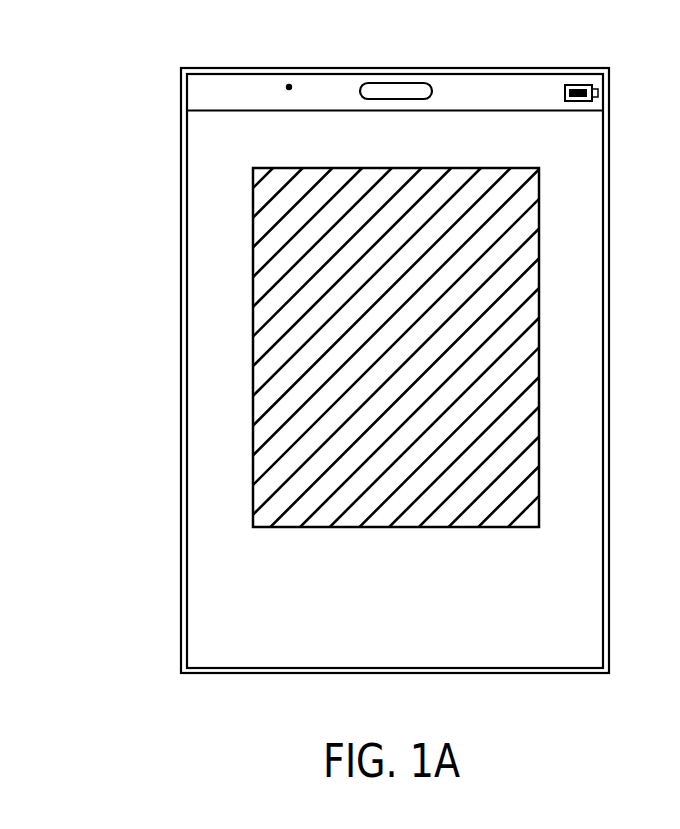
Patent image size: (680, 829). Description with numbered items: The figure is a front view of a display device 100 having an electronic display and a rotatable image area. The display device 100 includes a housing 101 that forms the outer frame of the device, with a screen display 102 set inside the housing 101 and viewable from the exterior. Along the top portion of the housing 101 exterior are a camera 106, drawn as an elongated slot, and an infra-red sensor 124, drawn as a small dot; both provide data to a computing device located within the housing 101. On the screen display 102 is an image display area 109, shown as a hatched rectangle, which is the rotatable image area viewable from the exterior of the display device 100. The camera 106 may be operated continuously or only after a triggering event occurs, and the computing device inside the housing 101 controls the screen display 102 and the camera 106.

The display device 100 is at (340, 348).
The housing 101 is at (610, 207).
The screen display 102 is at (605, 149).
The camera 106 is at (395, 82).
The infra-red sensor 124 is at (290, 84).
The image display area 109 is at (381, 518).